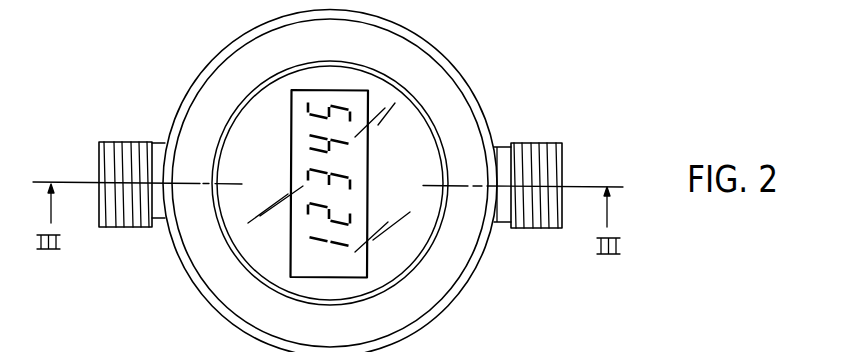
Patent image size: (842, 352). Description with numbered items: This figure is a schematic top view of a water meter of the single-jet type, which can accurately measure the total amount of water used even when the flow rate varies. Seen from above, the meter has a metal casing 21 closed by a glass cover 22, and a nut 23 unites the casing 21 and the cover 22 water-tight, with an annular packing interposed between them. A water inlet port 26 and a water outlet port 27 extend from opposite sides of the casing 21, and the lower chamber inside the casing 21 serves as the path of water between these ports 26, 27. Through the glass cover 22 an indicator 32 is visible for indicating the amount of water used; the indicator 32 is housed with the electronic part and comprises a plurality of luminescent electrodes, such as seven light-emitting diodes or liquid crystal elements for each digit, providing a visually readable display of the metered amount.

The metal casing 21 is at (508, 138).
The glass cover 22 is at (262, 168).
The nut 23 is at (452, 303).
The water inlet port 26 is at (99, 207).
The water outlet port 27 is at (555, 203).
The indicator 32 is at (369, 160).